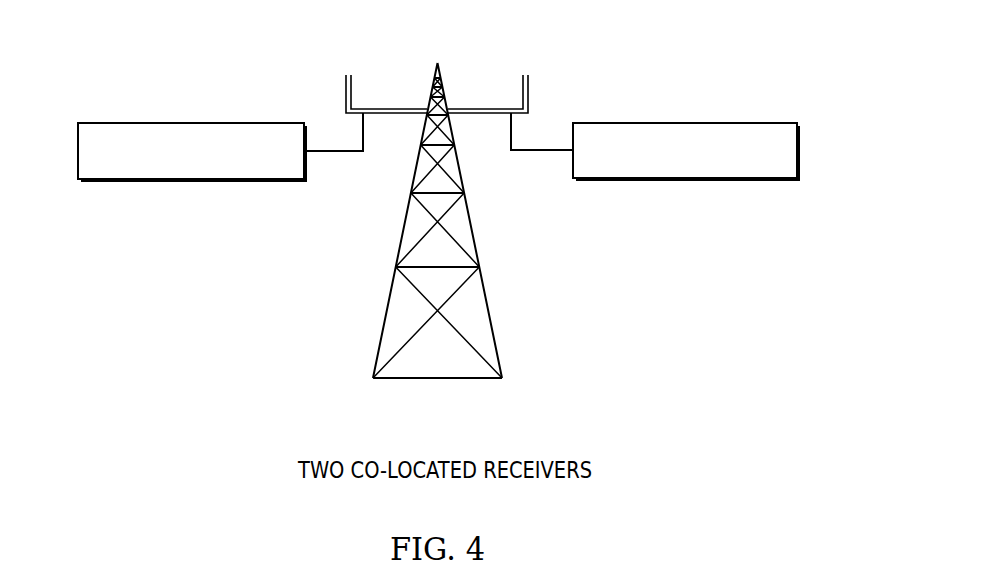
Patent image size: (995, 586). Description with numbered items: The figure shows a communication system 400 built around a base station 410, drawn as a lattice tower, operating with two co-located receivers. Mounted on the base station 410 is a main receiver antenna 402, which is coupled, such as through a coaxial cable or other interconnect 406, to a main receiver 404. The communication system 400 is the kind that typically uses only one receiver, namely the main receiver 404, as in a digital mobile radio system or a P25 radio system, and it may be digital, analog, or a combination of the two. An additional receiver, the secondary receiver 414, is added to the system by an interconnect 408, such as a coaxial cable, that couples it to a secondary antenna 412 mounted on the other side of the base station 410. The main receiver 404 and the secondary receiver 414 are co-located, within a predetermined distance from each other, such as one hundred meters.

The communication system 400 is at (743, 39).
The main receiver antenna 402 is at (530, 92).
The main receiver 404 is at (798, 152).
The main receiver feed line 406 is at (530, 151).
The interconnect 408 is at (333, 153).
The base station 410 is at (404, 232).
The secondary antenna 412 is at (346, 95).
The secondary receiver 414 is at (77, 148).